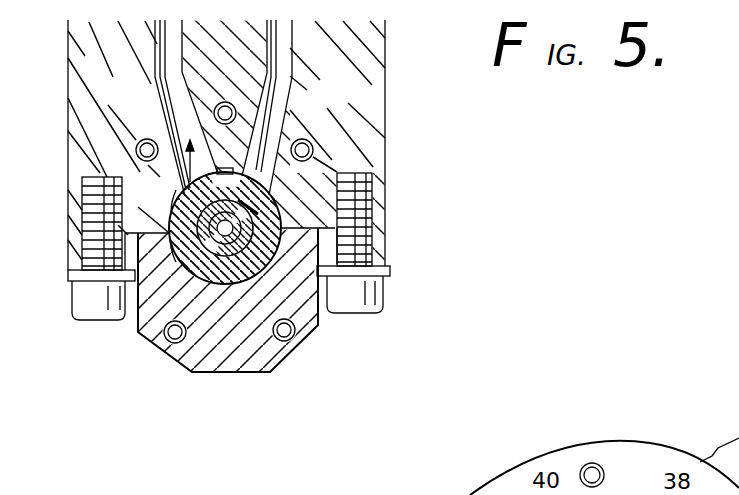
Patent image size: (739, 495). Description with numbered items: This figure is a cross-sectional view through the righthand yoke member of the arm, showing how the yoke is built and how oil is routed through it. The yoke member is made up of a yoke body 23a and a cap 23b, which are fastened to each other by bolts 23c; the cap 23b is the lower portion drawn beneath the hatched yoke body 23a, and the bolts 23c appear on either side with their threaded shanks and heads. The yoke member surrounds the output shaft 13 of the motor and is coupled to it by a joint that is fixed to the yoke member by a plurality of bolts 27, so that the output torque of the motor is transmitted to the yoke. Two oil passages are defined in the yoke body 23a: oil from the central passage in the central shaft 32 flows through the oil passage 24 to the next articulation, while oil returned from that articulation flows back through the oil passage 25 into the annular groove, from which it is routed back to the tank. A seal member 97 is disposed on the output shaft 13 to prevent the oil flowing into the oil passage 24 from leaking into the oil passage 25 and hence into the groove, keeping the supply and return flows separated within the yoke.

The output shaft 13 is at (225, 226).
The yoke body 23a is at (263, 145).
The cap 23b is at (231, 333).
The bolts 23c is at (244, 275).
The oil passage 24 is at (155, 108).
The oil passage 25 is at (292, 107).
The bolts 27 is at (144, 370).
The central shaft 32 is at (151, 250).
The seal member 97 is at (151, 198).